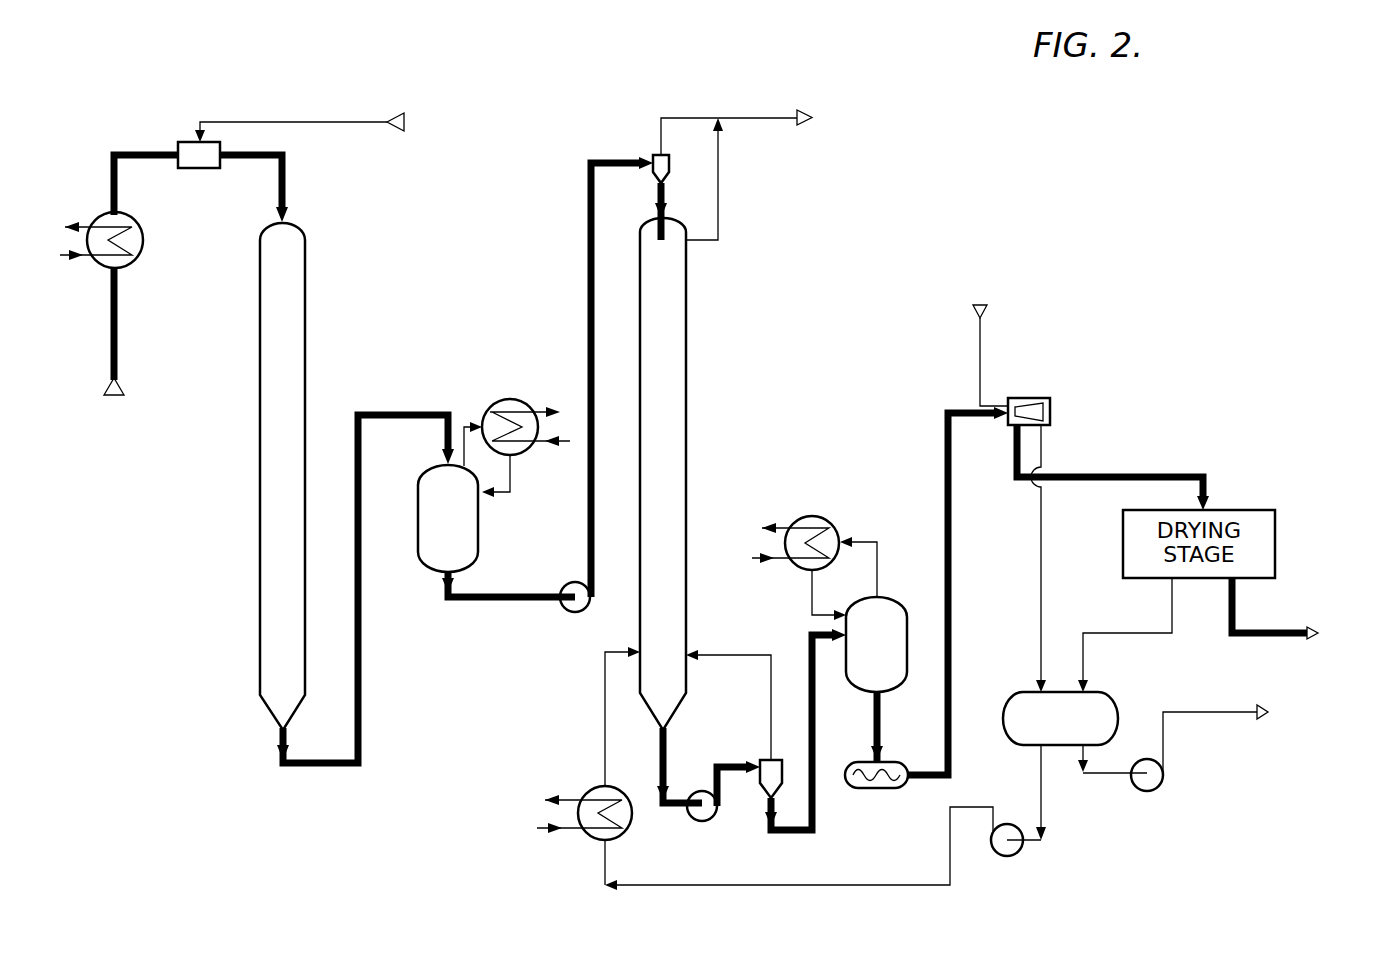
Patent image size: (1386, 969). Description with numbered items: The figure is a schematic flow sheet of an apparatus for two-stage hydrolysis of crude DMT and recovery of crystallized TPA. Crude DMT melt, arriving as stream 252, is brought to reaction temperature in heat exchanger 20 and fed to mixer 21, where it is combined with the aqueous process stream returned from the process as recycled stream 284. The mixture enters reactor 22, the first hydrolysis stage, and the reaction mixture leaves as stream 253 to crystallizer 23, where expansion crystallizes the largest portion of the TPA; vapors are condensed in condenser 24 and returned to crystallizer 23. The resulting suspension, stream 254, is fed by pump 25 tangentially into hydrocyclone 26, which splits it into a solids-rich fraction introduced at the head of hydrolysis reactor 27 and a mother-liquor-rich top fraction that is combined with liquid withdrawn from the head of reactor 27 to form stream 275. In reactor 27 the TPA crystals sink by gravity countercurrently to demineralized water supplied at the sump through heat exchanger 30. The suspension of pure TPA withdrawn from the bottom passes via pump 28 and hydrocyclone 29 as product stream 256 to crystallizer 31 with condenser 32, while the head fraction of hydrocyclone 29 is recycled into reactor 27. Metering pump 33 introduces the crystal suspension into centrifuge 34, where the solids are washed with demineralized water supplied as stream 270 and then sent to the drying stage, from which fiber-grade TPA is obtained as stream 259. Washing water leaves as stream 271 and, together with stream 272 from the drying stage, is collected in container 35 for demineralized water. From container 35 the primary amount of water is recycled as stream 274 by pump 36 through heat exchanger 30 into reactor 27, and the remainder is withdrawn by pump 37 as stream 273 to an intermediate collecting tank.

The heat exchanger 20 is at (129, 216).
The mixer 21 is at (207, 168).
The reactor 22 is at (306, 273).
The crystallizer 23 is at (480, 545).
The condenser 24 is at (513, 455).
The pump 25 is at (590, 608).
The hydrocyclone 26 is at (656, 148).
The hydrolysis reactor 27 is at (688, 293).
The pump 28 is at (717, 817).
The hydrocyclone 29 is at (769, 757).
The heat exchanger 30 is at (615, 842).
The crystallizer 31 is at (905, 608).
The condenser 32 is at (835, 503).
The metering pump 33 is at (888, 788).
The centrifuge 34 is at (1052, 420).
The container for demineralized water 35 is at (1024, 747).
The pump 36 is at (1013, 855).
The pump 37 is at (1162, 787).
The stream 252 is at (139, 366).
The stream 253 is at (365, 567).
The stream 254 is at (508, 604).
The product stream 256 is at (805, 751).
The stream 259 is at (1298, 611).
The stream 270 is at (973, 355).
The stream 271 is at (1022, 558).
The stream 272 is at (1125, 635).
The stream 273 is at (1292, 703).
The stream 274 is at (778, 768).
The stream 275 is at (793, 159).
The recycled stream 284 is at (371, 112).